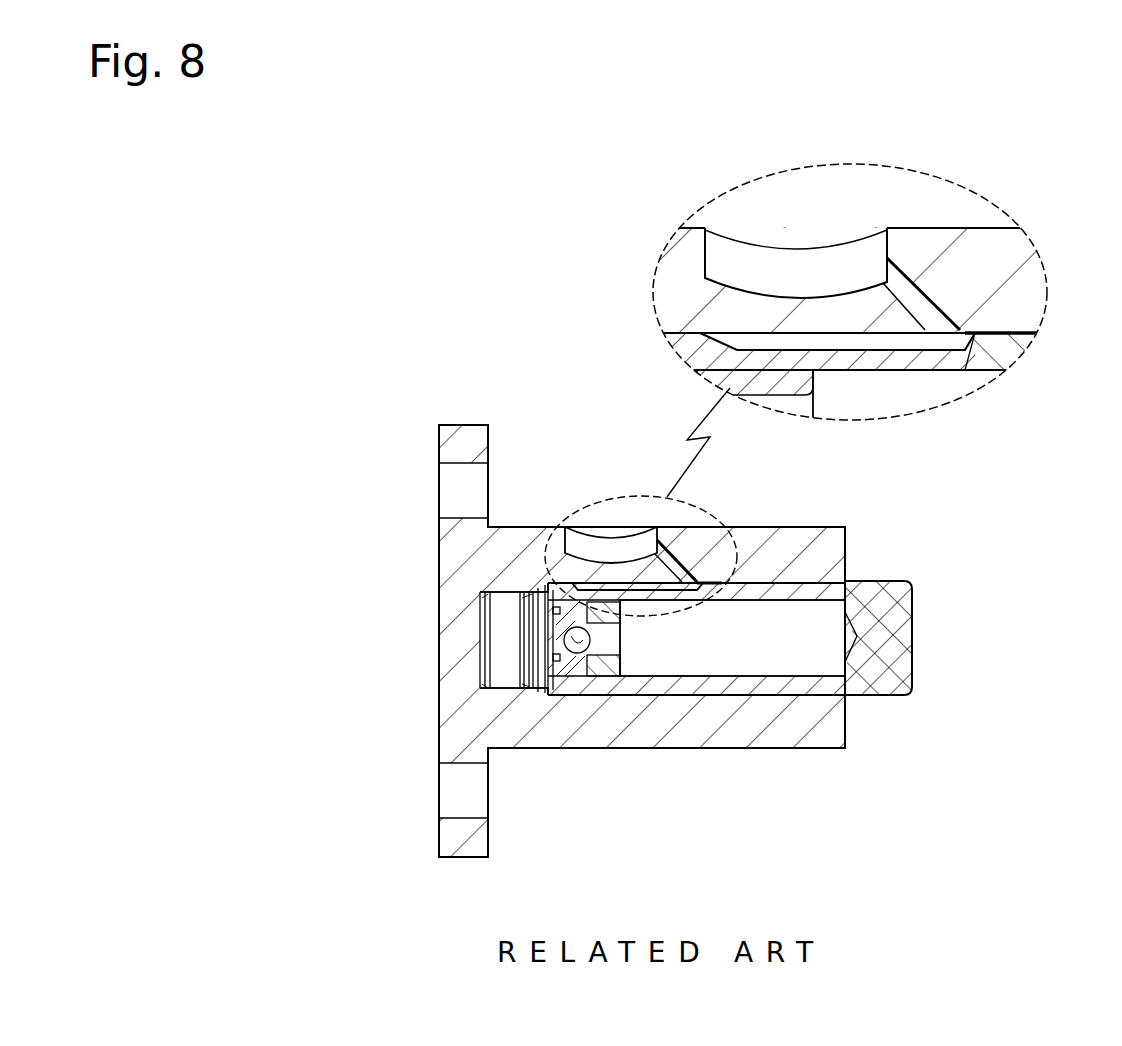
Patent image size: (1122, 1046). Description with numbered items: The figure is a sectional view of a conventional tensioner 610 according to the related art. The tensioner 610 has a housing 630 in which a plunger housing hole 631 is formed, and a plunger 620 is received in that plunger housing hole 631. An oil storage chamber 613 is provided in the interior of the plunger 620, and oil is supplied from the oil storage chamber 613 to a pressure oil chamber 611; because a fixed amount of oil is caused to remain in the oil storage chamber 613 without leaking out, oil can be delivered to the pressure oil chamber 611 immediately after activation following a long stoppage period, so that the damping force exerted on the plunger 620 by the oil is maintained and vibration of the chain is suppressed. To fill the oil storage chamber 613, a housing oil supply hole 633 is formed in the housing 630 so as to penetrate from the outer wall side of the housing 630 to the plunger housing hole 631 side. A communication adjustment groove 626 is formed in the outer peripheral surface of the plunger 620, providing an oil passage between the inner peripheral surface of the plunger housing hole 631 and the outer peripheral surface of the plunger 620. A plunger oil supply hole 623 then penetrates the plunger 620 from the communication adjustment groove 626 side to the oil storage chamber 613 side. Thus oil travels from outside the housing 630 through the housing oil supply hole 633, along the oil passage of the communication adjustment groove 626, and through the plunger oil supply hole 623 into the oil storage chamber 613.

The tensioner 610 is at (360, 213).
The pressure oil chamber 611 is at (507, 638).
The oil storage chamber 613 is at (758, 650).
The plunger 620 is at (897, 647).
The plunger oil supply hole 623 is at (977, 358).
The communication adjustment groove 626 is at (835, 342).
The housing 630 is at (808, 550).
The plunger housing hole 631 is at (768, 565).
The housing oil supply hole 633 is at (907, 290).